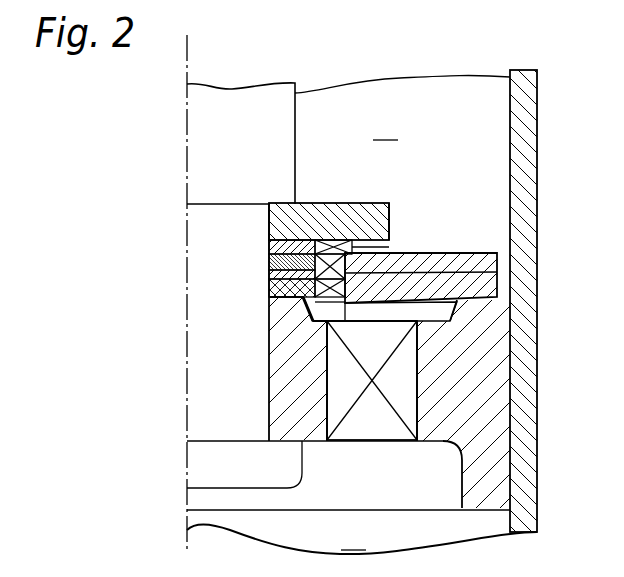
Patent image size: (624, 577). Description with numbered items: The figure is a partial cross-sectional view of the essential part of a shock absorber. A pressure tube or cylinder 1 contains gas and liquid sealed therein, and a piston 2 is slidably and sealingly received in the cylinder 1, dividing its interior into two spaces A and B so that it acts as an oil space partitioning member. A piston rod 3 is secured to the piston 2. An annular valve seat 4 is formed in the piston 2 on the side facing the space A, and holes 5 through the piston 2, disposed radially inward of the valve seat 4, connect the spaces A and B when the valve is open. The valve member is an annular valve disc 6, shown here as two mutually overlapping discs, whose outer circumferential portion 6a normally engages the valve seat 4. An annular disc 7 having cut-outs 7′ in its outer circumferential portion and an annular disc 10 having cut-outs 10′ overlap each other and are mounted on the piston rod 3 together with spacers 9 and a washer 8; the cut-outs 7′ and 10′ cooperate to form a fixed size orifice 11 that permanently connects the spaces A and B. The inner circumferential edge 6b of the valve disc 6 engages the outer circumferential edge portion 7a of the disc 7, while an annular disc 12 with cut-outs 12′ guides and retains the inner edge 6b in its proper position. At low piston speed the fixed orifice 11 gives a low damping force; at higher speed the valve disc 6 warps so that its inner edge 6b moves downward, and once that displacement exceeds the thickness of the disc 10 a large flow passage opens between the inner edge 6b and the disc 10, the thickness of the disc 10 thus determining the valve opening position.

The cylinder 1 is at (525, 127).
The piston 2 is at (498, 343).
The piston rod 3 is at (191, 122).
The annular valve seat 4 is at (500, 305).
The hole 5 is at (418, 405).
The annular valve disc 6 is at (400, 252).
The outer circumferential portion of valve disc 6a is at (500, 300).
The inner circumferential edge of valve disc 6b is at (342, 300).
The annular disc 7 is at (268, 246).
The cut-outs 7′ is at (275, 218).
The outer circumferential edge portion of disc 7a is at (389, 245).
The washer 8 is at (390, 217).
The spacers 9 is at (268, 291).
The annular disc 10 is at (268, 262).
The cut-outs 10′ is at (320, 288).
The fixed size orifice 11 is at (305, 292).
The annular disc 12 is at (285, 296).
The cut-outs 12′ is at (310, 320).
The space A is at (385, 127).
The space B is at (353, 537).